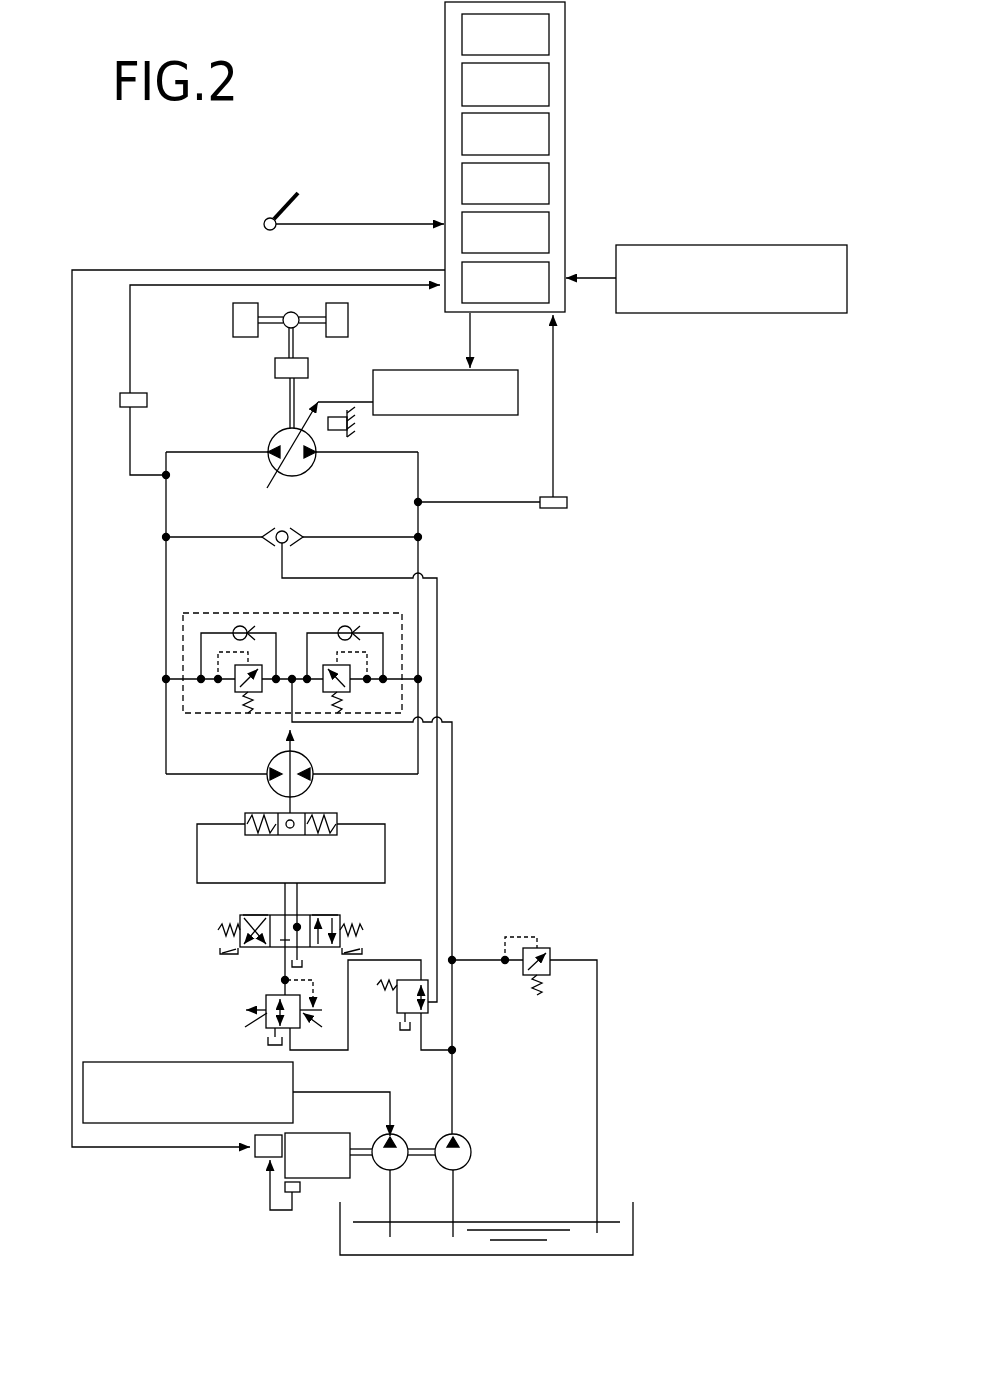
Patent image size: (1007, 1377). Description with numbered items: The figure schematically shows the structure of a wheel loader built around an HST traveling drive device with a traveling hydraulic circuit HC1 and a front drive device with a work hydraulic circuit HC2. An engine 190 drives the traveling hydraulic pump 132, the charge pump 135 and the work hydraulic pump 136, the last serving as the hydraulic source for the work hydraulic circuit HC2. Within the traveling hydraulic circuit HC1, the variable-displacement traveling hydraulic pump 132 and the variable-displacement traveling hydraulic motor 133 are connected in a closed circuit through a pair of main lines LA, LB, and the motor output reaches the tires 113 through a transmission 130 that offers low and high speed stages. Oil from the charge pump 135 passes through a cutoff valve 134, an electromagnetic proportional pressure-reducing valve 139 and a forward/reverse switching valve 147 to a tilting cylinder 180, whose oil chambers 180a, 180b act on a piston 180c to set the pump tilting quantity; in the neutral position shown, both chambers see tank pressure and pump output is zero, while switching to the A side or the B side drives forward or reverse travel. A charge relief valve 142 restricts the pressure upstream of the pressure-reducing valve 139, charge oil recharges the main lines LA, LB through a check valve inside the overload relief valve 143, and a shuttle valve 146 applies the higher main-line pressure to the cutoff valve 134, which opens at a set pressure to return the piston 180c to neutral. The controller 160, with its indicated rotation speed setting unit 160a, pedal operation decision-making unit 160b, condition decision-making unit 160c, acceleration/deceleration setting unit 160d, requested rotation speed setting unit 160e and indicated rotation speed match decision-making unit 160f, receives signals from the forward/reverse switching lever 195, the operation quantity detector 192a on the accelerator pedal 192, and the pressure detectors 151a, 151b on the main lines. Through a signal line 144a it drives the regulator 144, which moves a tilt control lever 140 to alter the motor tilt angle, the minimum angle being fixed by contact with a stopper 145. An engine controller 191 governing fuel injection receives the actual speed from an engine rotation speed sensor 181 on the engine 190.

The controller 160 is at (567, 185).
The indicated rotation speed setting unit 160a is at (532, 46).
The pedal operation decision-making unit 160b is at (532, 95).
The condition decision-making unit 160c is at (532, 145).
The acceleration/deceleration setting unit 160d is at (532, 195).
The requested rotation speed setting unit 160e is at (532, 244).
The indicated rotation speed match decision-making unit 160f is at (532, 294).
The forward/reverse switching lever 195 is at (695, 315).
The accelerator pedal 192 is at (287, 198).
The operation quantity detector 192a is at (264, 220).
The tires 113 is at (233, 320).
The pressure detector 151a is at (140, 393).
The pressure detector 151b is at (560, 508).
The transmission 130 is at (273, 373).
The traveling hydraulic motor 133 is at (268, 466).
The tilt control lever 140 is at (312, 425).
The stopper 145 is at (360, 428).
The regulator 144 is at (478, 415).
The signal line 144a is at (473, 323).
The shuttle valve 146 is at (293, 543).
The overload relief valve 143 is at (358, 613).
The traveling hydraulic pump 132 is at (272, 758).
The tilting cylinder 180 is at (327, 812).
The oil chamber 180a is at (250, 837).
The oil chamber 180b is at (322, 837).
The piston 180c is at (293, 840).
The forward/reverse switching valve 147 is at (340, 915).
The electromagnetic proportional pressure-reducing valve 139 is at (237, 1022).
The cutoff valve 134 is at (433, 1017).
The charge relief valve 142 is at (546, 950).
The engine 190 is at (347, 1180).
The engine controller 191 is at (254, 1161).
The engine rotation speed sensor 181 is at (293, 1193).
The work hydraulic pump 136 is at (407, 1163).
The charge pump 135 is at (473, 1162).
The traveling hydraulic circuit HC1 is at (165, 510).
The work hydraulic circuit HC2 is at (125, 1127).
The main line LA is at (166, 633).
The main line LB is at (418, 560).
The A side A is at (325, 902).
The B side B is at (255, 902).